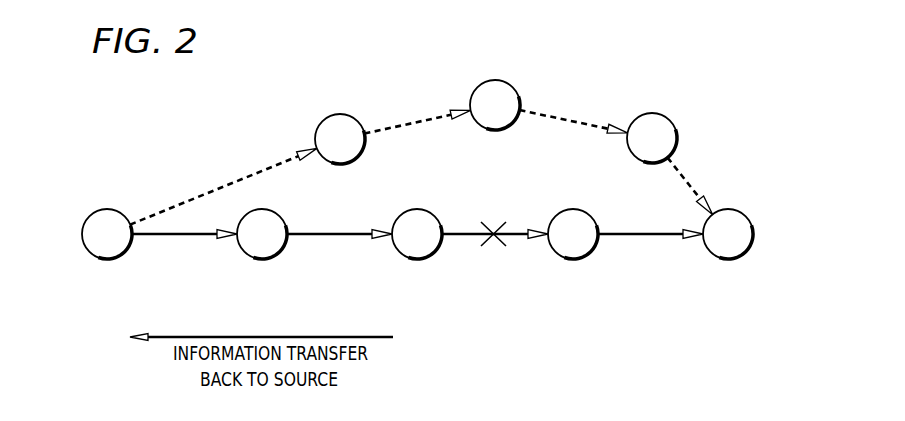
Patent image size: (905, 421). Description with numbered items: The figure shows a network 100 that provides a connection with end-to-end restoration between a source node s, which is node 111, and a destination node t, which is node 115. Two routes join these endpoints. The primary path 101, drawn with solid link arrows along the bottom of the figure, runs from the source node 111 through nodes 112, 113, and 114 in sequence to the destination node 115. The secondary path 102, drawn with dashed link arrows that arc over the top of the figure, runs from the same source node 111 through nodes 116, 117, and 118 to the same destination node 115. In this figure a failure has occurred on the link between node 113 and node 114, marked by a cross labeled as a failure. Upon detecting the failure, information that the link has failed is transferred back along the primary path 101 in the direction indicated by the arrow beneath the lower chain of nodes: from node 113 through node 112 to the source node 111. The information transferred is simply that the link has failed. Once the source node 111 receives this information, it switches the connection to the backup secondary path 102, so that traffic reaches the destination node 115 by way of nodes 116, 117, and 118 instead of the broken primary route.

The network 100 is at (158, 105).
The primary path 101 is at (478, 193).
The secondary path 102 is at (620, 62).
The source node s 111 is at (82, 233).
The node 112 is at (262, 259).
The node 113 is at (413, 259).
The node 114 is at (571, 259).
The destination node t 115 is at (753, 238).
The node 116 is at (321, 125).
The node 117 is at (492, 80).
The node 118 is at (670, 119).